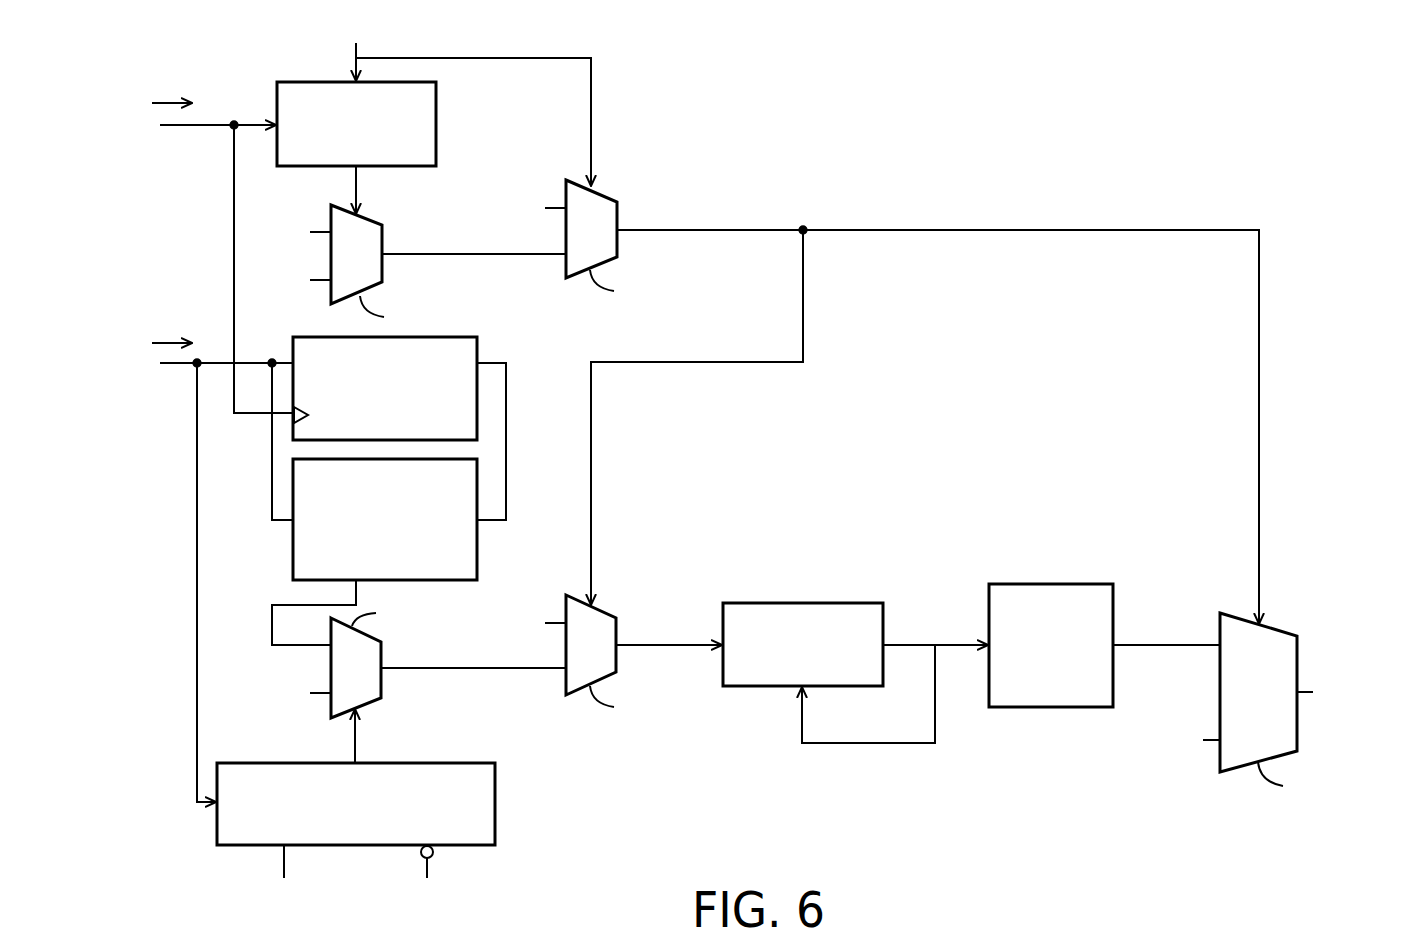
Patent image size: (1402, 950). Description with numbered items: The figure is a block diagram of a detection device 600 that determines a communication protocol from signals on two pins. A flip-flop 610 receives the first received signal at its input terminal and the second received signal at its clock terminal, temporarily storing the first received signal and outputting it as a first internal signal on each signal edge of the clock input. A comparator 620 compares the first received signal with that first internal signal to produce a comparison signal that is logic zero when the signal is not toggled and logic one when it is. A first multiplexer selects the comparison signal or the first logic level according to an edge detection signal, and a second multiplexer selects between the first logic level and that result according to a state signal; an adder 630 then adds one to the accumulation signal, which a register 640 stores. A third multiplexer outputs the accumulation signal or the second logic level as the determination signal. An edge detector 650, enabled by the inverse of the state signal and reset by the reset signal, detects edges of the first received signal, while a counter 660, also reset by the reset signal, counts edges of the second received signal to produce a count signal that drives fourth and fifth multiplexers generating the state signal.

The detection device 600 is at (1077, 855).
The flip-flop 610 is at (423, 426).
The comparator 620 is at (410, 557).
The adder 630 is at (724, 602).
The register 640 is at (1077, 682).
The edge detector 650 is at (217, 762).
The counter 660 is at (437, 125).